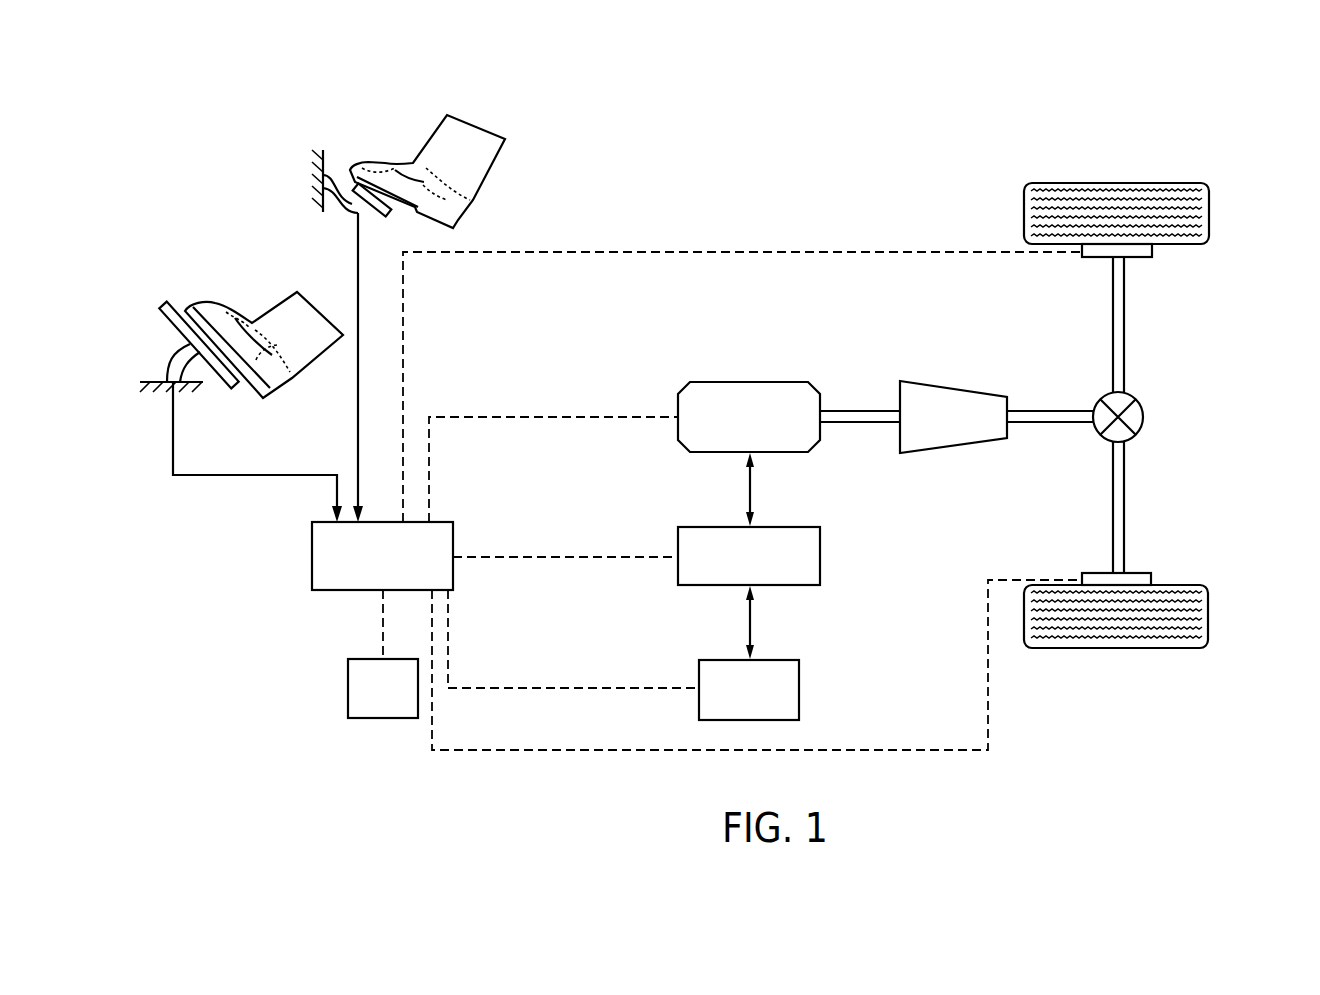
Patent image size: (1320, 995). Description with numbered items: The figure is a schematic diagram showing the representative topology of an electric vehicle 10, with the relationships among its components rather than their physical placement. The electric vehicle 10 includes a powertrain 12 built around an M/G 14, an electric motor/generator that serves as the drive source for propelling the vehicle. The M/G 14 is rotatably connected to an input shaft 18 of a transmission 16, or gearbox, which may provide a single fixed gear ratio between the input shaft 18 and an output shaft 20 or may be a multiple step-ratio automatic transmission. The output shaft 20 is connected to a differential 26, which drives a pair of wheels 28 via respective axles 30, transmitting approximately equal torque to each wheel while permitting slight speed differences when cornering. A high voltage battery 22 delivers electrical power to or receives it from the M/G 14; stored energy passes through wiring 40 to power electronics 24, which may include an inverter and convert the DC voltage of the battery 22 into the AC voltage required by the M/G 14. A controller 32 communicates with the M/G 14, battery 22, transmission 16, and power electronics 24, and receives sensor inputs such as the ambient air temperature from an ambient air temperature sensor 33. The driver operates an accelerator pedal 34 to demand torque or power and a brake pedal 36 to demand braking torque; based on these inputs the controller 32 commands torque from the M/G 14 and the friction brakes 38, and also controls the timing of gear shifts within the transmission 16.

The electric vehicle 10 is at (923, 135).
The powertrain 12 is at (787, 338).
The M/G 14 is at (678, 404).
The transmission 16 is at (947, 394).
The input shaft 18 is at (858, 416).
The output shaft 20 is at (1044, 416).
The battery 22 is at (699, 672).
The power electronics 24 is at (678, 540).
The differential 26 is at (1142, 418).
The wheels 28 is at (1210, 214).
The axles 30 is at (1124, 343).
The controller 32 is at (312, 553).
The ambient air temperature sensor 33 is at (348, 690).
The accelerator pedal 34 is at (236, 281).
The brake pedal 36 is at (398, 124).
The friction brakes 38 is at (1150, 254).
The wiring 40 is at (753, 628).